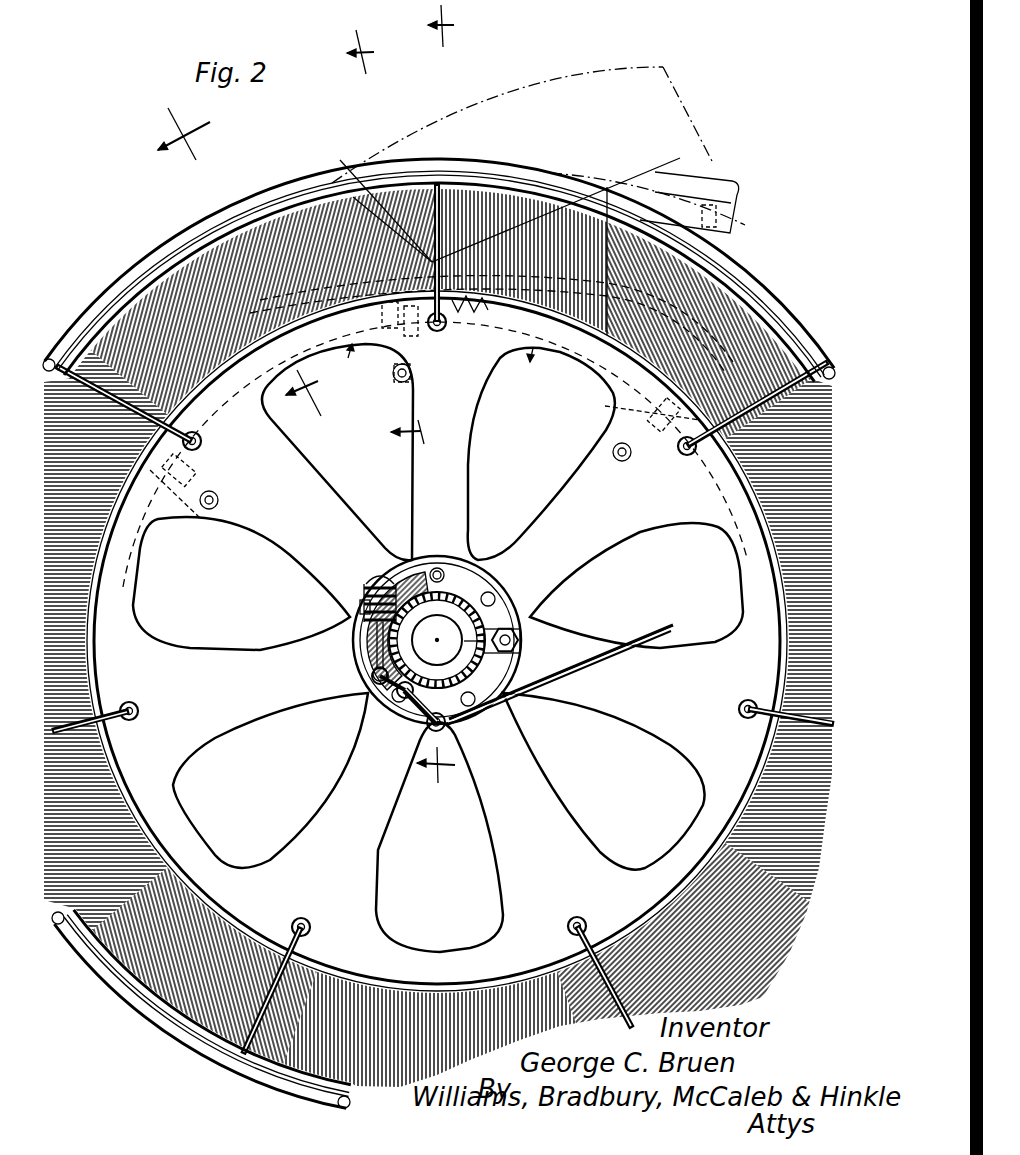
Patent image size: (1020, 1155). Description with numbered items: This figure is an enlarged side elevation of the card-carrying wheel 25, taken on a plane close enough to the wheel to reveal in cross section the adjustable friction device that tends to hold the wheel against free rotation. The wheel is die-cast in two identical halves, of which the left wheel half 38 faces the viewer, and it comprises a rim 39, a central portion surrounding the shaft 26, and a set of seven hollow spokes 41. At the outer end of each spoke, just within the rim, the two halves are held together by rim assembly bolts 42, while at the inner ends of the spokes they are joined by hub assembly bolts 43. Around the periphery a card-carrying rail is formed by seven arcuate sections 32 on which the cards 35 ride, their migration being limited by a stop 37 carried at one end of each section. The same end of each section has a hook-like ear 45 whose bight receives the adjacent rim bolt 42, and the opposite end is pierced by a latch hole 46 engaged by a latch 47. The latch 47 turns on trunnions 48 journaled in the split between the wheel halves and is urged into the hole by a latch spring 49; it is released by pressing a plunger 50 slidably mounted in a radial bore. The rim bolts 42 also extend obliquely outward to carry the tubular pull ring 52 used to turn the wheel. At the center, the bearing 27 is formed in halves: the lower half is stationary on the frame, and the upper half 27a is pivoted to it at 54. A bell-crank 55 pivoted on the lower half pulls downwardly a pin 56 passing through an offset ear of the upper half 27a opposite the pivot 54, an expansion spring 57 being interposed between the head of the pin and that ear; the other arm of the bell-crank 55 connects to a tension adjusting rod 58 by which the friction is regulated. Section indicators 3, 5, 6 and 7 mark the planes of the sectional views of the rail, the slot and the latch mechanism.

The section line 3- 3 is at (448, 400).
The section line 5- 5 is at (394, 237).
The section line 6- 6 is at (239, 265).
The section line 7- 7 is at (442, 367).
The wheel 25 is at (452, 506).
The hub 26 is at (440, 618).
The bearing 27 is at (512, 690).
The upper bearing half 27a is at (462, 590).
The arcuate rail section 32 is at (603, 312).
The card 35 is at (72, 346).
The stop 37 is at (337, 180).
The wheel half 38 is at (715, 703).
The rim 39 is at (95, 598).
The hollow spoke 41 is at (264, 642).
The rim assembly bolt 42 is at (201, 444).
The hub assembly bolt 43 is at (437, 566).
The hook-like ear 45 is at (418, 352).
The latch hole 46 is at (648, 400).
The latch 47 is at (218, 488).
The trunnion 48 is at (178, 518).
The latch spring 49 is at (220, 505).
The plunger 50 is at (605, 429).
The tubular pull ring 52 is at (150, 252).
The pivot 54 is at (520, 628).
The bell-crank 55 is at (418, 728).
The pin 56 is at (356, 656).
The expansion spring 57 is at (360, 600).
The tension adjusting rod 58 is at (648, 616).